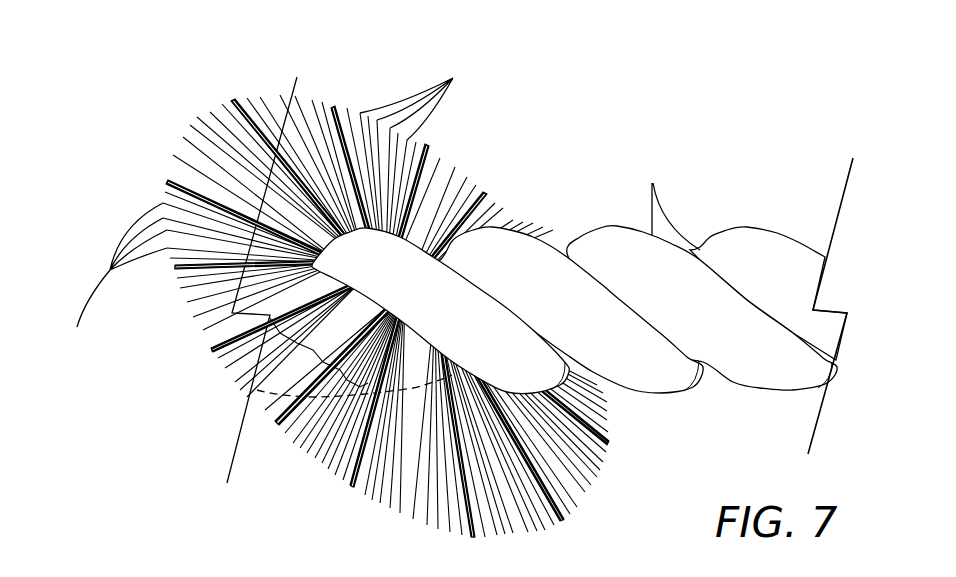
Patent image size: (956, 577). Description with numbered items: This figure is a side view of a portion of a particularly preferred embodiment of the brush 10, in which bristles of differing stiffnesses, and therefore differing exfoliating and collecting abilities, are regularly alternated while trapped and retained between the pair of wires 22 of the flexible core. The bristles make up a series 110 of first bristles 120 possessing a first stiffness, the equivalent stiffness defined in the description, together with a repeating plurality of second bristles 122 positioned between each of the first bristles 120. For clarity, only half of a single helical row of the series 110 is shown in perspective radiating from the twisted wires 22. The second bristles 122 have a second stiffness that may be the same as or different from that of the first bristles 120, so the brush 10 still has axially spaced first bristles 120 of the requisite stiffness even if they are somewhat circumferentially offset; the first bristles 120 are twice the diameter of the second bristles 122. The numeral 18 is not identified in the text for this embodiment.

The brush 10 is at (722, 212).
The brush portion 18 is at (330, 100).
The pair of wires 22 is at (663, 204).
The series of bristles 110 is at (512, 207).
The first bristles 120 is at (233, 100).
The second bristles 122 is at (264, 207).